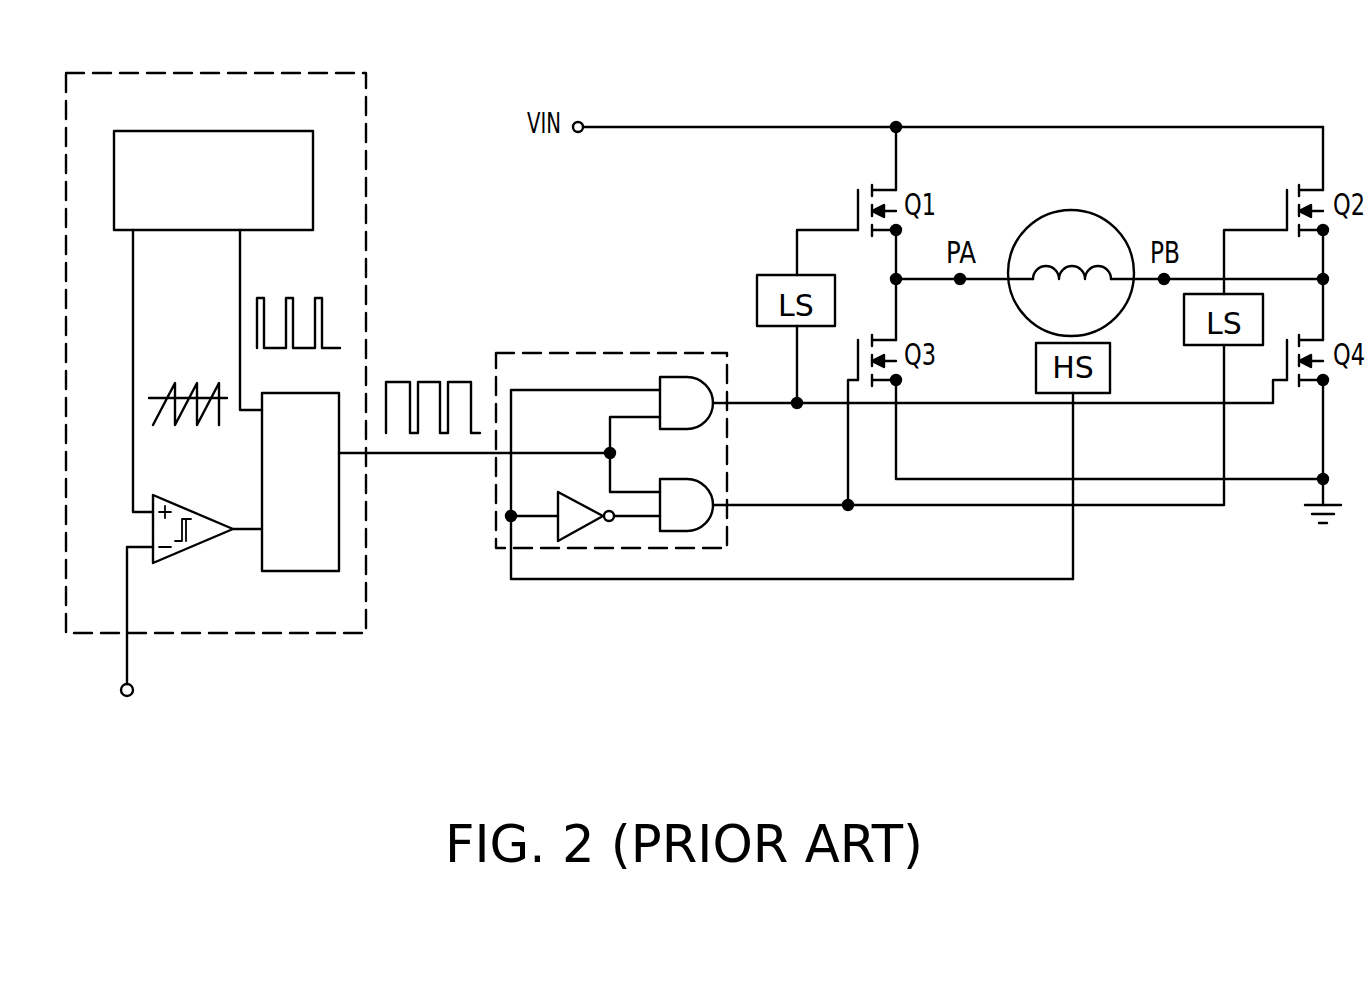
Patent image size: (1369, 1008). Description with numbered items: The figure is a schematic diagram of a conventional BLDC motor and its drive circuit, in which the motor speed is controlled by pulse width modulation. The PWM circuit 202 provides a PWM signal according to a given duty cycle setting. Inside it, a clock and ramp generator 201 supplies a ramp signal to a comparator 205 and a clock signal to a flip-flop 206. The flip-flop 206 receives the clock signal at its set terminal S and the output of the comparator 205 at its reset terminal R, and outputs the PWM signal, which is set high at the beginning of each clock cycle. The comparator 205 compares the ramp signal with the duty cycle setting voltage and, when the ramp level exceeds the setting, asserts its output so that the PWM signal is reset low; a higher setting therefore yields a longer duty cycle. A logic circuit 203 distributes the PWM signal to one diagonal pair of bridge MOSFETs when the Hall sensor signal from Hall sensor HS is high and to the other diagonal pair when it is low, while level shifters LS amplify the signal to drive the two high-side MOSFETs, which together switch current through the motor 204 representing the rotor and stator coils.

The clock and ramp generator 201 is at (155, 131).
The pulse width modulation (PWM) circuit 202 is at (333, 633).
The logic circuit 203 is at (496, 516).
The motor 204 is at (1135, 222).
The comparator 205 is at (186, 503).
The flip-flop 206 is at (287, 571).